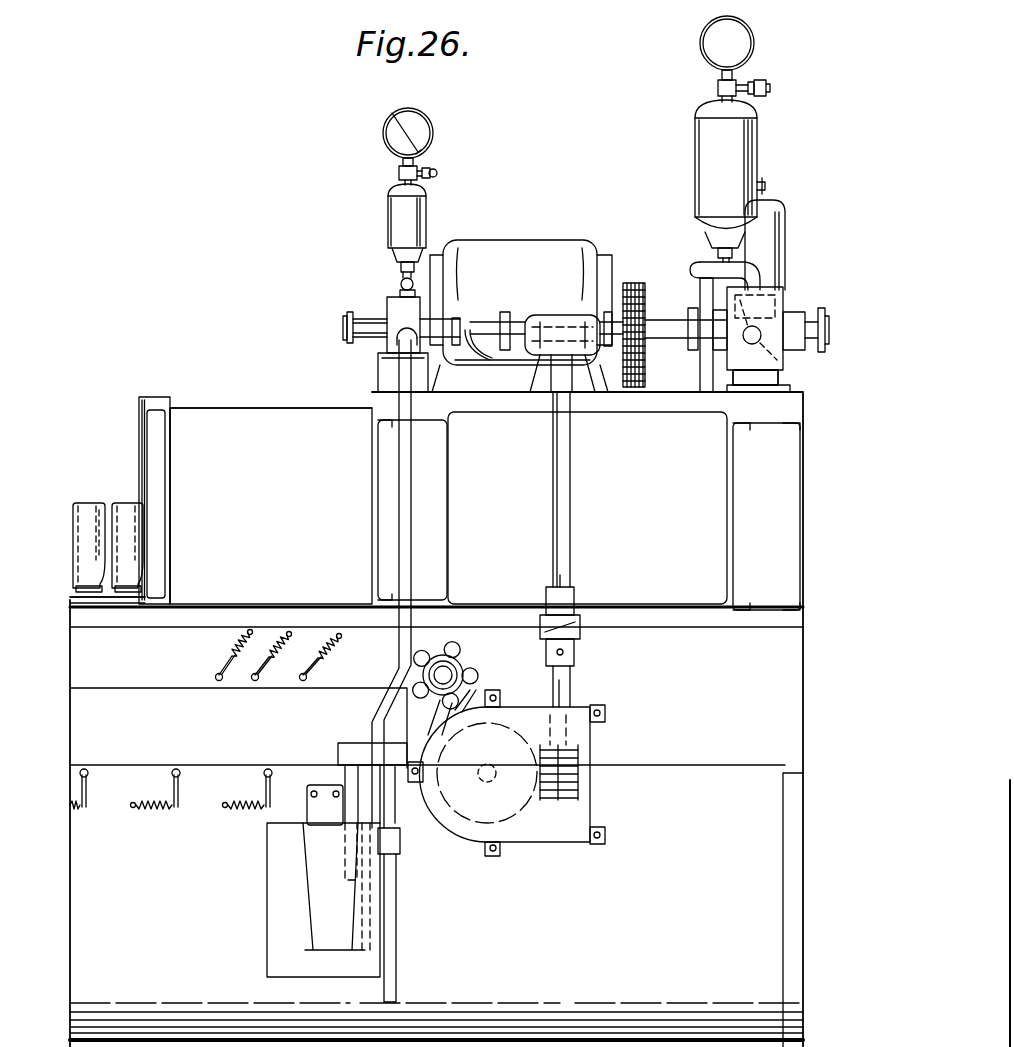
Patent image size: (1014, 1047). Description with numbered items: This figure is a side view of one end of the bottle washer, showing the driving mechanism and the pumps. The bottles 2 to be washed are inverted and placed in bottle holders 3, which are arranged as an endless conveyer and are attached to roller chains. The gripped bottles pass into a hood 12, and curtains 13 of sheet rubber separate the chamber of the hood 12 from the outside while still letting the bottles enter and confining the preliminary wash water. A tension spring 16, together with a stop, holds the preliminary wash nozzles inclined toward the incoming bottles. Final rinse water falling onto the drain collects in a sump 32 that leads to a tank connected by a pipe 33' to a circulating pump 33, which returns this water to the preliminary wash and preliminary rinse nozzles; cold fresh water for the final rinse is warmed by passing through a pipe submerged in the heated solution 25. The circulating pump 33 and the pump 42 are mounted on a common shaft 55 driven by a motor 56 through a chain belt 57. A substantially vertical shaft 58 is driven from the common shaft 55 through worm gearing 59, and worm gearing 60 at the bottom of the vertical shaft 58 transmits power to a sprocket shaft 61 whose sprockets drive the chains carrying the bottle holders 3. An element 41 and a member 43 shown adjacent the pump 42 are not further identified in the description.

The bottles 2 is at (122, 505).
The bottle holders 3 is at (72, 598).
The hood 12 is at (271, 506).
The curtains 13 is at (139, 450).
The tension spring 16 is at (340, 655).
The heated solution 25 is at (436, 719).
The sump 32 is at (268, 920).
The circulating pump 33 is at (401, 250).
The pipe 33' is at (432, 671).
The pump base 41 is at (781, 362).
The pump 42 is at (780, 318).
The support 43 is at (700, 375).
The common shaft 55 is at (664, 336).
The motor 56 is at (521, 316).
The chain belt 57 is at (634, 288).
The vertical shaft 58 is at (571, 450).
The worm gearing 59 is at (545, 338).
The worm gearing 60 is at (580, 768).
The sprocket shaft 61 is at (487, 782).